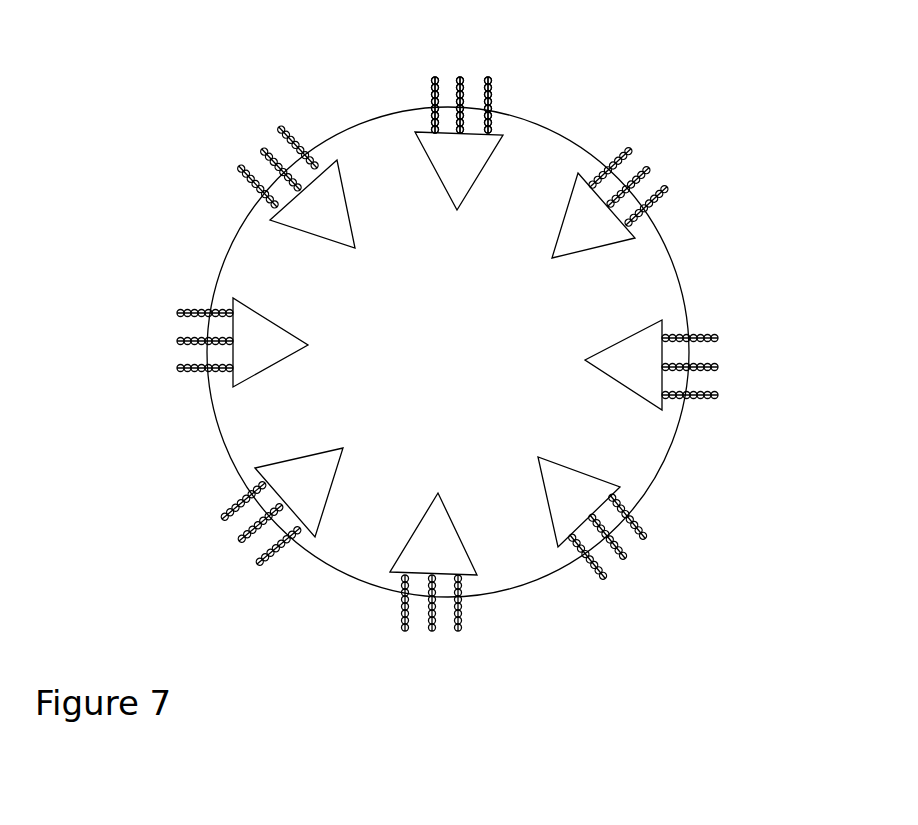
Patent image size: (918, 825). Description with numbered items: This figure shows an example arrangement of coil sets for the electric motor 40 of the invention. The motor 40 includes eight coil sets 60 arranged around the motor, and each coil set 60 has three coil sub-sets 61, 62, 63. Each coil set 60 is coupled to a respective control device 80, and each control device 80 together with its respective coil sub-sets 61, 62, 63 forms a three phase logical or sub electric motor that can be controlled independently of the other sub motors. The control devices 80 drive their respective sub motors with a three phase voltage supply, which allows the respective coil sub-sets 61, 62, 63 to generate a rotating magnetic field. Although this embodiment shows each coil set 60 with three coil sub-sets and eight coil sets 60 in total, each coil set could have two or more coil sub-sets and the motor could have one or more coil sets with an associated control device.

The motor 40 is at (752, 532).
The coil set 60 is at (502, 63).
The coil sub-set 61 is at (492, 92).
The coil sub-set 62 is at (464, 80).
The coil sub-set 63 is at (433, 103).
The control device 80 is at (463, 173).